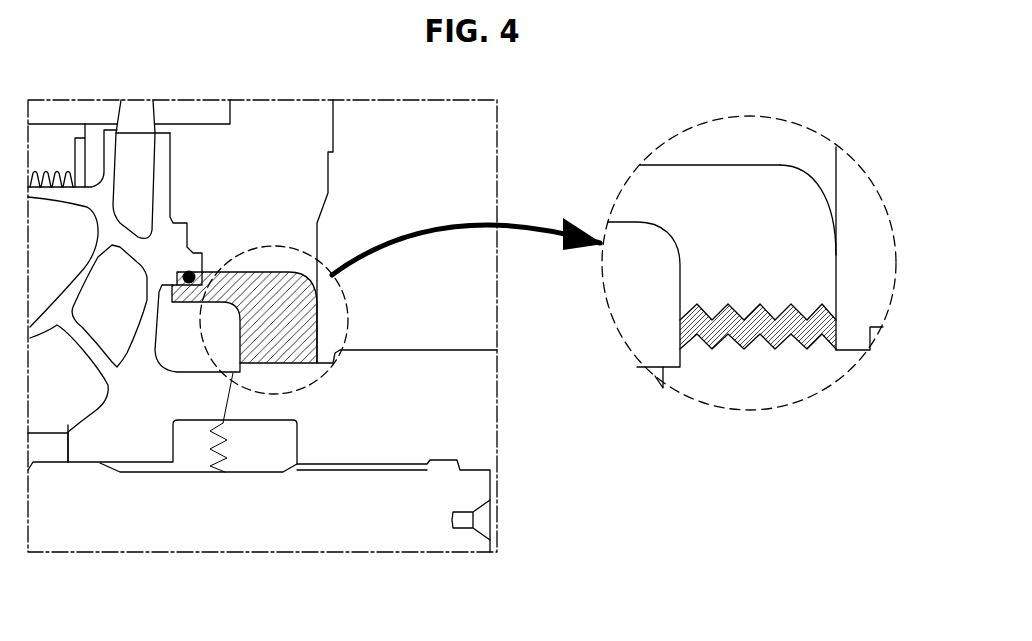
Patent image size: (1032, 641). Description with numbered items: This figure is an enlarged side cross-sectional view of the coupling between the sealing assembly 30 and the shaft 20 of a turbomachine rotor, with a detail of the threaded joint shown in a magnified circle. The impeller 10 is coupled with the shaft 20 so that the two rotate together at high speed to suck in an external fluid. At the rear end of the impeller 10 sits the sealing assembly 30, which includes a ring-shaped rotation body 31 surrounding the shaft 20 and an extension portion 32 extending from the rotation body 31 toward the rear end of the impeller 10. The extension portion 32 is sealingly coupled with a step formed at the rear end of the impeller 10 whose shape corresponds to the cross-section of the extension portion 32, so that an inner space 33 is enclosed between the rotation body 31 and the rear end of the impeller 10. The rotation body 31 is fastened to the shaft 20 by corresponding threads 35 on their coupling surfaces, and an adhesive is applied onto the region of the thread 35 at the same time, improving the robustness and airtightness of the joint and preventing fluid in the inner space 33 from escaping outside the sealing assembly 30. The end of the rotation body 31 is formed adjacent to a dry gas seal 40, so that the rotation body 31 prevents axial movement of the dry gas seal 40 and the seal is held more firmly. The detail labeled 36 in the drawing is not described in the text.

The impeller 10 is at (88, 348).
The shaft 20 is at (458, 414).
The sealing assembly 30 is at (271, 244).
The rotation body 31 is at (788, 230).
The extension portion 32 is at (665, 180).
The inner space 33 is at (648, 338).
The thread 35 is at (713, 350).
The serrated contact portion 36 is at (790, 350).
The dry gas seal 40 is at (477, 202).